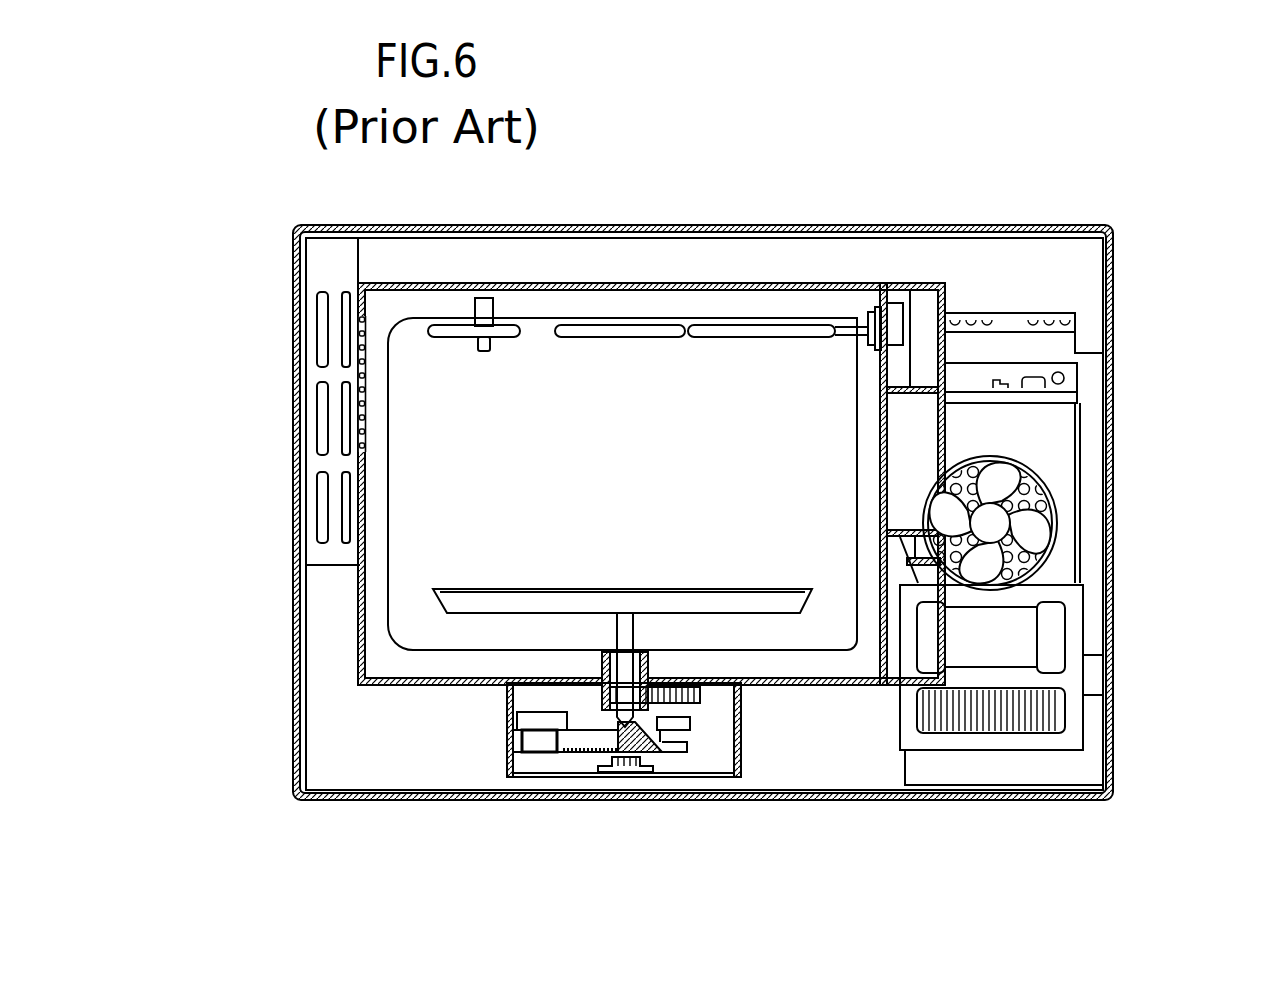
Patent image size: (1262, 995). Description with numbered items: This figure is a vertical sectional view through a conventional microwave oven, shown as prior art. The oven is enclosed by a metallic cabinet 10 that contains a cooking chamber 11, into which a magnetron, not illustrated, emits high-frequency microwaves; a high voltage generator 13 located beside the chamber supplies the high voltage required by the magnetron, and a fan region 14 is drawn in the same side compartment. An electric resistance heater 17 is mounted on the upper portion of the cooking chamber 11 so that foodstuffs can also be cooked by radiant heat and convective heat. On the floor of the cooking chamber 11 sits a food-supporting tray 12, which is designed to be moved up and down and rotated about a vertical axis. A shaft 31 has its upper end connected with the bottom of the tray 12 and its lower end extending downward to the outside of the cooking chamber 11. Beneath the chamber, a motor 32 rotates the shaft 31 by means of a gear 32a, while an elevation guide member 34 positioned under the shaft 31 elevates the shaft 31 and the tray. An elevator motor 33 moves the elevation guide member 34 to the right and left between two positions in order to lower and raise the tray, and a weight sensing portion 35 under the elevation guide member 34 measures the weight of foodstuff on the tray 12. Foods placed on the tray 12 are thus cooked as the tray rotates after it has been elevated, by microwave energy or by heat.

The metallic cabinet 10 is at (722, 218).
The cooking chamber 11 is at (648, 513).
The food-supporting tray 12 is at (497, 594).
The high voltage generator 13 is at (1073, 677).
The cooling fan 14 is at (1093, 513).
The electric resistance heater 17 is at (788, 322).
The shaft 31 is at (620, 665).
The motor 32 is at (713, 722).
The gear 32a is at (677, 717).
The elevator motor 33 is at (533, 720).
The elevation guide member 34 is at (638, 722).
The weight sensing portion 35 is at (595, 773).